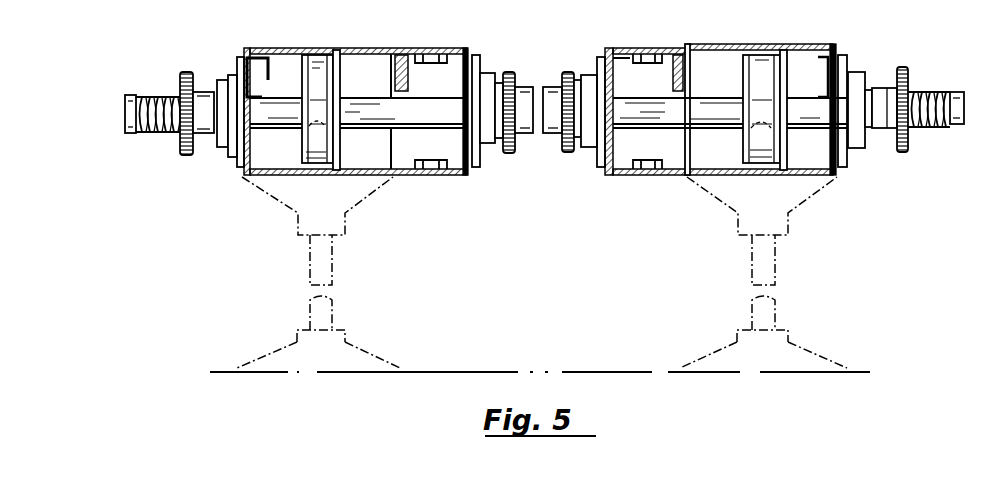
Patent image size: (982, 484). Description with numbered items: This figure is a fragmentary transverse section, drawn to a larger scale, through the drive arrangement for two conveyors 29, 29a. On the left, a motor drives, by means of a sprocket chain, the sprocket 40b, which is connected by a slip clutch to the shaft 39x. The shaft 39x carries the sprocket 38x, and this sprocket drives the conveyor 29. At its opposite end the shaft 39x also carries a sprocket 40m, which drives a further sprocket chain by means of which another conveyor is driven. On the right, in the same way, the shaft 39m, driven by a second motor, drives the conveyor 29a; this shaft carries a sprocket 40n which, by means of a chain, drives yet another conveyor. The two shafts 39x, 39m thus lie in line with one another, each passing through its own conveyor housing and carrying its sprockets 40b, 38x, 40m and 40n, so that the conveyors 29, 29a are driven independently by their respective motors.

The conveyor 29 is at (356, 49).
The conveyor 29a is at (733, 48).
The sprocket 38x is at (303, 72).
The shaft 39x is at (277, 117).
The shaft 39m is at (805, 125).
The sprocket 40b is at (187, 72).
The sprocket 40m is at (527, 47).
The sprocket 40n is at (572, 61).